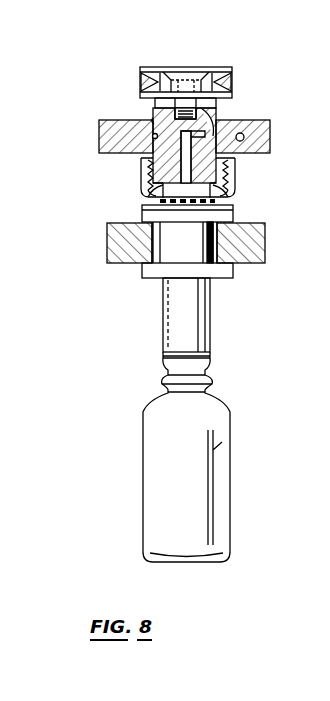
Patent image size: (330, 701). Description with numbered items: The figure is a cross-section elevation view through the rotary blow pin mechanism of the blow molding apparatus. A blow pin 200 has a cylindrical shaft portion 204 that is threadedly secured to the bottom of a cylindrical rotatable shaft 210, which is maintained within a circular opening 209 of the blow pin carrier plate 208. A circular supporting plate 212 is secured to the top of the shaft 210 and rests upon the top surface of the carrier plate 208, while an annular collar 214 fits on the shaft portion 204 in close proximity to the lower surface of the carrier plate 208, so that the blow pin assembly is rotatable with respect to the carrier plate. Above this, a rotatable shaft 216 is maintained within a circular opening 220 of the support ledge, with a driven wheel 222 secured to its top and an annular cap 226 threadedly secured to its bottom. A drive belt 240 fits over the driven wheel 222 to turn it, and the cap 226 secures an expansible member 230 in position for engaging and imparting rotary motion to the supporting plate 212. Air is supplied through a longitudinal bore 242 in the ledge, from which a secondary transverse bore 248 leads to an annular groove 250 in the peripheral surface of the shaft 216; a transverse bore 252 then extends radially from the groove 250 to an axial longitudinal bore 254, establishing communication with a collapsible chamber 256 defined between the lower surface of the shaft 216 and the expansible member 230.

The blow pin 200 is at (148, 328).
The cylindrical shaft portion 204 is at (212, 325).
The blow pin carrier plate 208 is at (120, 255).
The circular opening 209 is at (151, 236).
The rotatable shaft 210 is at (197, 249).
The circular supporting plate 212 is at (142, 213).
The annular collar 214 is at (151, 272).
The rotatable shaft 216 is at (157, 121).
The circular opening 220 is at (151, 121).
The driven wheel 222 is at (195, 67).
The annular cap 226 is at (236, 180).
The expansible member 230 is at (162, 199).
The drive belt 240 is at (232, 86).
The longitudinal bore 242 is at (245, 137).
The secondary transverse bore 248 is at (237, 160).
The annular groove 250 is at (152, 136).
The transverse bore 252 is at (214, 121).
The axial longitudinal bore 254 is at (181, 158).
The collapsible chamber 256 is at (229, 196).